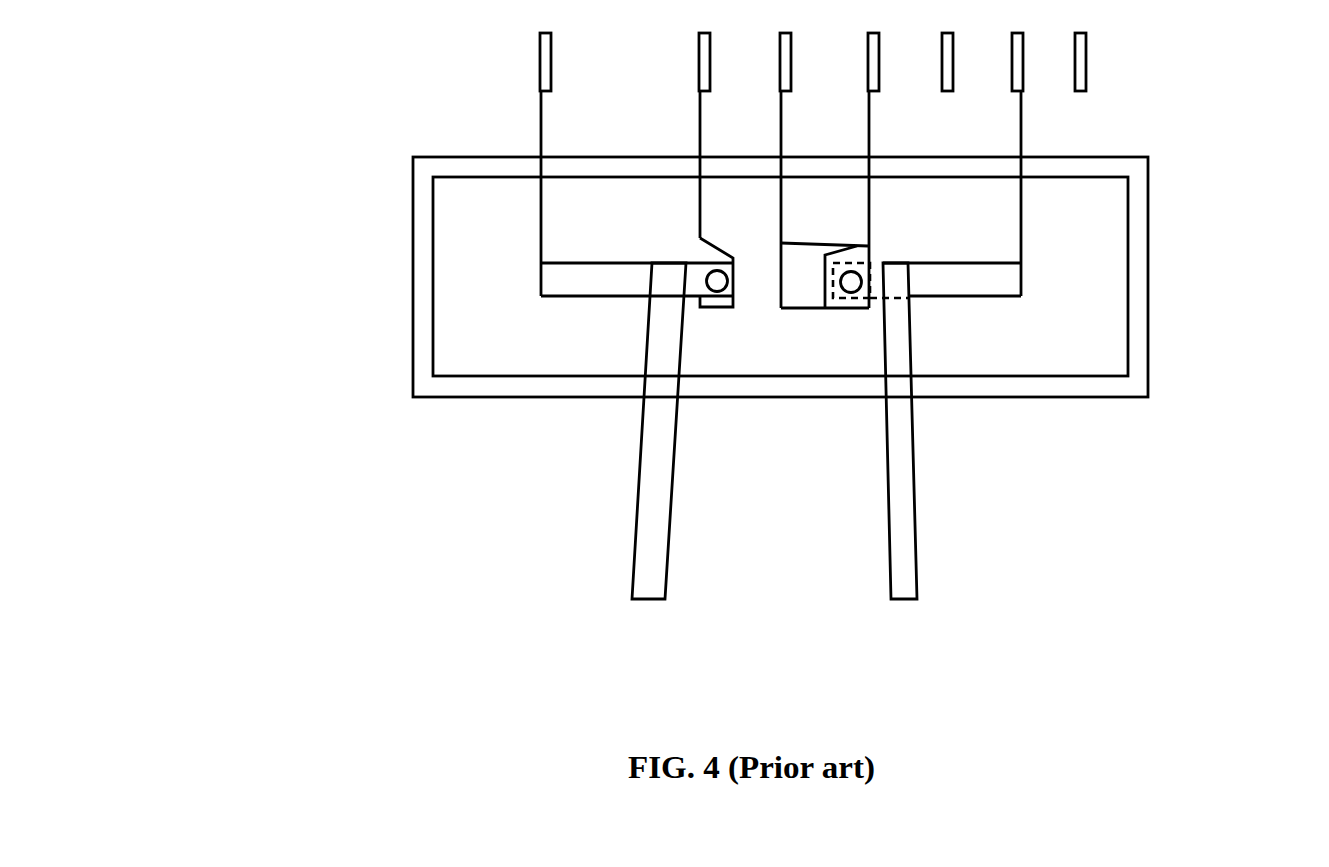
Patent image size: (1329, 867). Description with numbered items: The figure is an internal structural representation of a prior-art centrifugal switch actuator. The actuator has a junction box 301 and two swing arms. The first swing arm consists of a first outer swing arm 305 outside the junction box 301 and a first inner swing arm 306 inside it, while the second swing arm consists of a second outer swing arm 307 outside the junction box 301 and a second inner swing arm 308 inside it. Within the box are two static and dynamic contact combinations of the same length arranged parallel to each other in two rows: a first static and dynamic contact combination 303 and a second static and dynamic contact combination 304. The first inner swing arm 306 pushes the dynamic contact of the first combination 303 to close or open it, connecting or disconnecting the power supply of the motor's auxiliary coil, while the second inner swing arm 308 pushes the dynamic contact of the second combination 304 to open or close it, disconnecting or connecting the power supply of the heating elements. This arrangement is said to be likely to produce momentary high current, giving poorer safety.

The junction box 301 is at (639, 293).
The first static and dynamic contact combination 303 is at (1075, 222).
The second static and dynamic contact combination 304 is at (780, 420).
The first outer swing arm 305 is at (1014, 474).
The first inner swing arm 306 is at (1045, 369).
The second outer swing arm 307 is at (545, 493).
The second inner swing arm 308 is at (575, 378).